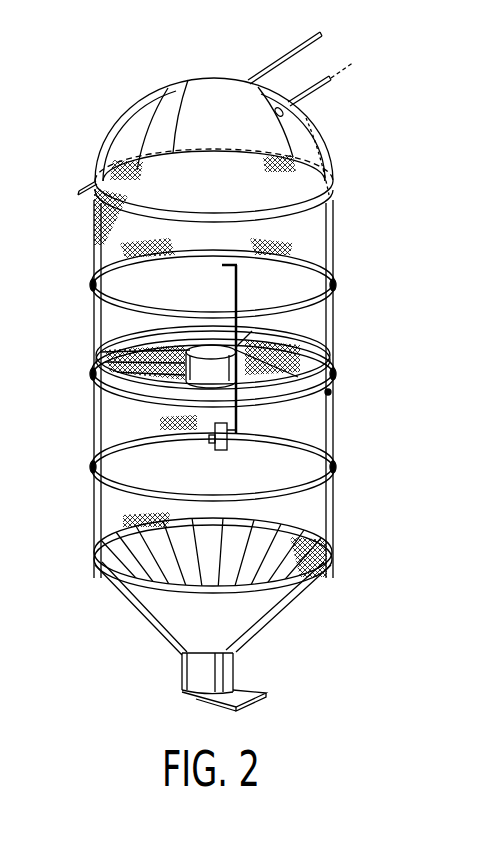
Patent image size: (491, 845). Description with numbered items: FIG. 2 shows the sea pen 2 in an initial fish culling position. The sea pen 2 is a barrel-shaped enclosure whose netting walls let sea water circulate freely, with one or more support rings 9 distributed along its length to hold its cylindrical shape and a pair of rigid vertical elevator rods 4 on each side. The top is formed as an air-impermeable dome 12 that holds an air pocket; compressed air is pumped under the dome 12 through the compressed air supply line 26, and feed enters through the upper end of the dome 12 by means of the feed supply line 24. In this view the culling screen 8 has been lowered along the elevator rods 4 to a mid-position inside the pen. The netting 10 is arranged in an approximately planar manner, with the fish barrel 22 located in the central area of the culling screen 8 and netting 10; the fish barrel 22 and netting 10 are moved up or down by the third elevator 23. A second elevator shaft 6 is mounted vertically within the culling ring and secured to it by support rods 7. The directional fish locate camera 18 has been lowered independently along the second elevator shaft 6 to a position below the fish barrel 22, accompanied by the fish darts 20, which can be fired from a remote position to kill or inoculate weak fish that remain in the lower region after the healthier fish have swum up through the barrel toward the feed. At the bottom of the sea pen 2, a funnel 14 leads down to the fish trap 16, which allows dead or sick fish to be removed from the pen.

The sea pen 2 is at (62, 298).
The elevator rods 4 is at (92, 416).
The second elevator shaft 6 is at (238, 415).
The support rods 7 is at (272, 350).
The culling screen 8 is at (117, 333).
The support rings 9 is at (330, 393).
The netting 10 is at (186, 335).
The dome 12 is at (168, 90).
The funnel 14 is at (152, 606).
The fish trap 16 is at (222, 668).
The fish locate camera 18 is at (222, 451).
The fish darts 20 is at (210, 441).
The fish barrel 22 is at (195, 378).
The third elevator 23 is at (324, 395).
The feed supply line 24 is at (313, 88).
The compressed air supply line 26 is at (278, 62).